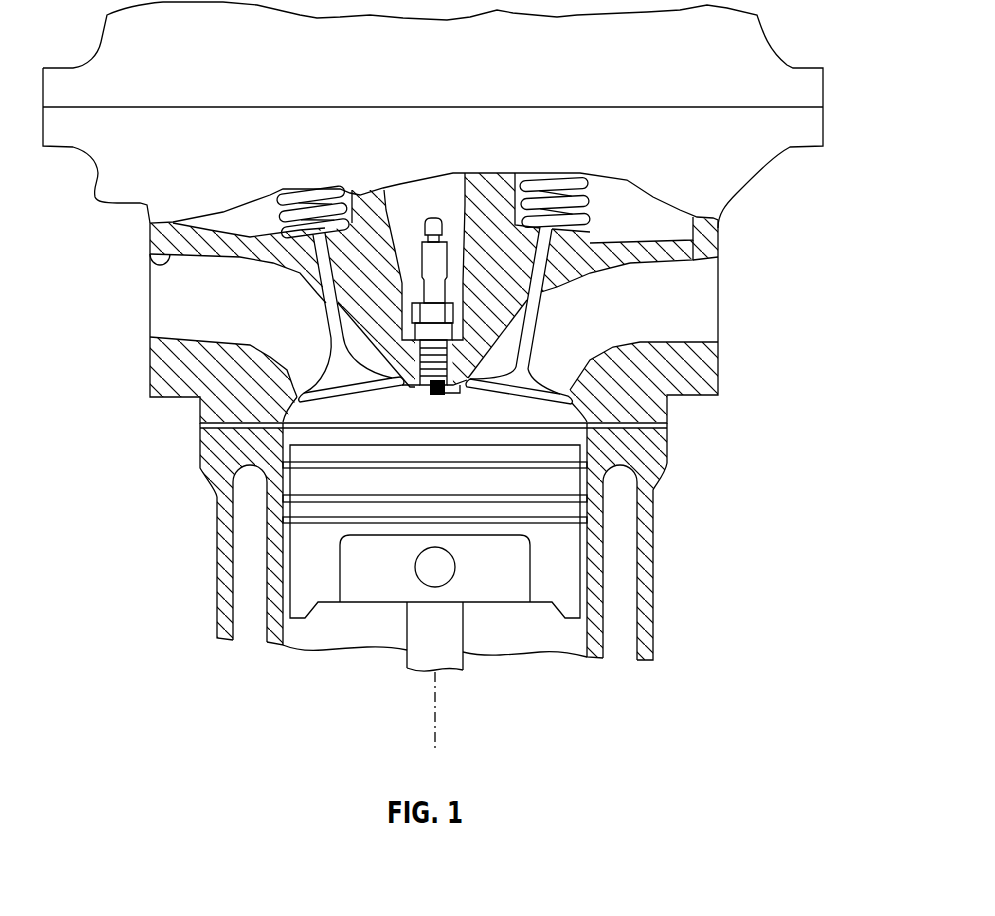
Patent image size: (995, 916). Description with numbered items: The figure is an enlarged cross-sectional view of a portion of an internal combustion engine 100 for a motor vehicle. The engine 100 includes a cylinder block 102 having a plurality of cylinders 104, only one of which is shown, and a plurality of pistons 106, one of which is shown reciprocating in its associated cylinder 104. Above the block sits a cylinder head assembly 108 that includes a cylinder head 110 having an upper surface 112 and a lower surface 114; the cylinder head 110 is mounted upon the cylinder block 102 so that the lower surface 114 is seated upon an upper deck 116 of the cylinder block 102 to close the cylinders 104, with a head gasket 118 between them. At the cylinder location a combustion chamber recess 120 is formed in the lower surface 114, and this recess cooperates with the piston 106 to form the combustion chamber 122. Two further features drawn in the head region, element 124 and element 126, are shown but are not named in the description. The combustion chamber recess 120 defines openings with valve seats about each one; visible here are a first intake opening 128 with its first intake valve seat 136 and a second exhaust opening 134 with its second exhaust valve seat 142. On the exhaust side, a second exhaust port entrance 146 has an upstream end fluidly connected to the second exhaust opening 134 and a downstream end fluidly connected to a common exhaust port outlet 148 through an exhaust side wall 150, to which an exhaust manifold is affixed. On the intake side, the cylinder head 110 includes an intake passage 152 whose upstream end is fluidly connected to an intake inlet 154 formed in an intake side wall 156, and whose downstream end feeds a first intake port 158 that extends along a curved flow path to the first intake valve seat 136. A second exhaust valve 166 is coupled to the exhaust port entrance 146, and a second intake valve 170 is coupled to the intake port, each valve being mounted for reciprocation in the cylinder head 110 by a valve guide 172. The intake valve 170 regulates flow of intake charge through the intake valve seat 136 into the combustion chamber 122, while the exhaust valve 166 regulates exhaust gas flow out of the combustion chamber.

The internal combustion engine 100 is at (750, 193).
The cylinder block 102 is at (653, 443).
The cylinder 104 is at (586, 655).
The piston 106 is at (570, 588).
The cylinder head assembly 108 is at (720, 218).
The cylinder head 110 is at (727, 238).
The upper surface 112 is at (688, 107).
The lower surface 114 is at (580, 410).
The upper deck 116 is at (627, 430).
The head gasket 118 is at (657, 432).
The combustion chamber recess 120 is at (453, 385).
The combustion chamber 122 is at (423, 402).
The spark plug bore 124 is at (384, 192).
The cylinder axis 126 is at (437, 697).
The first intake opening 128 is at (403, 387).
The second exhaust opening 134 is at (458, 386).
The first intake valve seat 136 is at (222, 492).
The second exhaust valve seat 142 is at (566, 427).
The second exhaust port entrance 146 is at (698, 260).
The exhaust port outlet 148 is at (717, 342).
The exhaust side wall 150 is at (717, 258).
The intake passage 152 is at (150, 265).
The intake inlet 154 is at (150, 337).
The intake side wall 156 is at (150, 383).
The first intake port 158 is at (350, 343).
The second exhaust valve 166 is at (717, 393).
The second intake valve 170 is at (327, 337).
The valve guide 172 is at (317, 307).